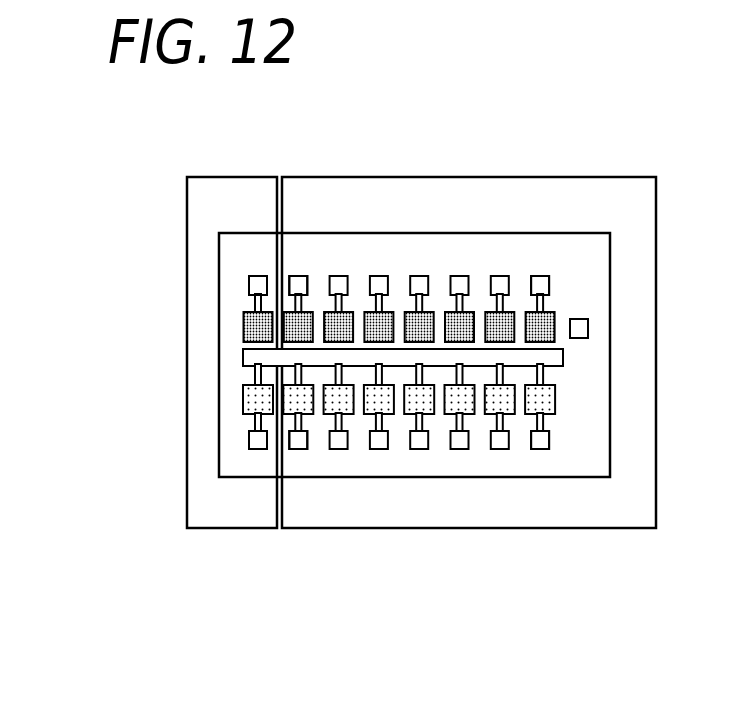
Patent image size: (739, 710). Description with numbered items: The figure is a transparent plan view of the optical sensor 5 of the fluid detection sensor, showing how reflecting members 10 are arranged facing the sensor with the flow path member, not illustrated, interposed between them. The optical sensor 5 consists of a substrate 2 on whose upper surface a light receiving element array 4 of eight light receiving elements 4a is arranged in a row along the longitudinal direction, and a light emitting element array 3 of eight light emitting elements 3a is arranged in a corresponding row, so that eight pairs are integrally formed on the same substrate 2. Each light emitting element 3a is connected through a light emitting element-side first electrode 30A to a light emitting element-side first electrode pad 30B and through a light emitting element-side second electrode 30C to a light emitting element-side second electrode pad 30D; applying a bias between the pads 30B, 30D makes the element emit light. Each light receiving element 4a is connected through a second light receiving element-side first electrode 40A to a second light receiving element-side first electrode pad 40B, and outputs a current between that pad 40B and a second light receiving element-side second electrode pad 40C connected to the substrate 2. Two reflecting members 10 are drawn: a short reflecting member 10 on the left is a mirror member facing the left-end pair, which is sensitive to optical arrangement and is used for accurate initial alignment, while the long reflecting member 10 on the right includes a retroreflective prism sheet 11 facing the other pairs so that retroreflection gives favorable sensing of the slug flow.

The reflecting member 10 is at (198, 197).
The retroreflective prism sheet 11 is at (637, 200).
The substrate 2 is at (597, 440).
The light receiving element array 4 is at (414, 191).
The light receiving element 4a is at (258, 293).
The second light receiving element-side first electrode 40A is at (460, 303).
The second light receiving element-side first electrode pad 40B is at (540, 293).
The second light receiving element-side second electrode pad 40C is at (580, 325).
The optical sensor 5 is at (605, 328).
The light emitting element array 3 is at (420, 523).
The light emitting element 3a is at (258, 408).
The light emitting element-side first electrode 30A is at (341, 435).
The light emitting element-side first electrode pad 30B is at (380, 443).
The light emitting element-side second electrode 30C is at (460, 390).
The light emitting element-side second electrode pad 30D is at (548, 360).